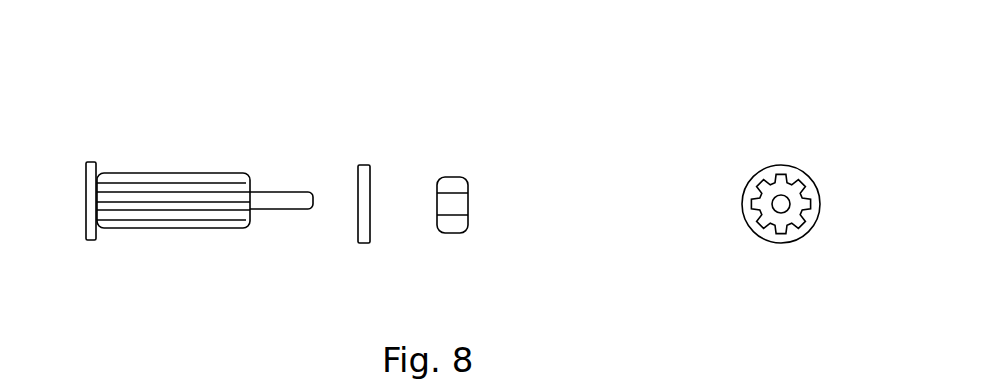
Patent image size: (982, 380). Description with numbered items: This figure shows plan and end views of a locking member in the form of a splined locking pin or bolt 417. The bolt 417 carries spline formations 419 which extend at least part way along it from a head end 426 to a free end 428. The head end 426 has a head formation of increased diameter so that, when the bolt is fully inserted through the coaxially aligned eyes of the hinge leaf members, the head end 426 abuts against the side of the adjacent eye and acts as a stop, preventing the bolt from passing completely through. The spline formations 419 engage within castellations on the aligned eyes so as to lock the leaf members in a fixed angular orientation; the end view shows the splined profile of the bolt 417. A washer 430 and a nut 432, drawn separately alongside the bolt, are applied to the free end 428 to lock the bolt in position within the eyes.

The splined locking pin or bolt 417 is at (453, 197).
The spline formations 419 is at (232, 185).
The head end 426 is at (96, 162).
The free end 428 is at (285, 213).
The washer 430 is at (362, 165).
The nut 432 is at (463, 178).